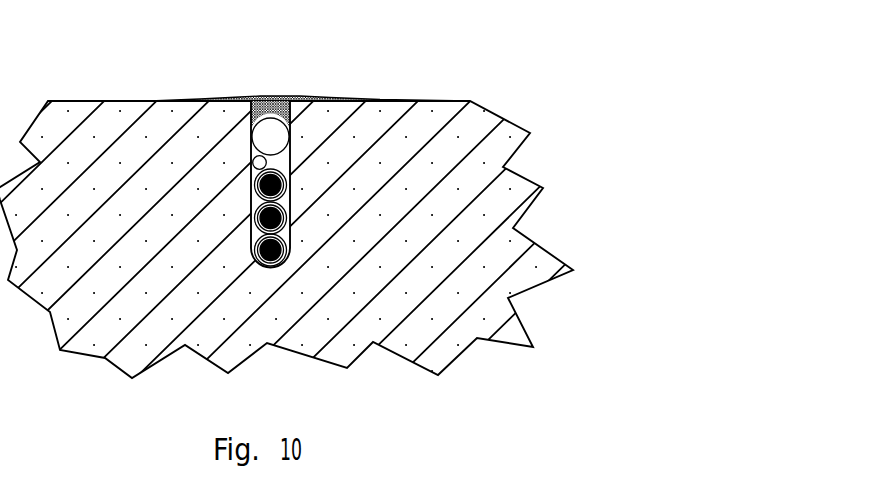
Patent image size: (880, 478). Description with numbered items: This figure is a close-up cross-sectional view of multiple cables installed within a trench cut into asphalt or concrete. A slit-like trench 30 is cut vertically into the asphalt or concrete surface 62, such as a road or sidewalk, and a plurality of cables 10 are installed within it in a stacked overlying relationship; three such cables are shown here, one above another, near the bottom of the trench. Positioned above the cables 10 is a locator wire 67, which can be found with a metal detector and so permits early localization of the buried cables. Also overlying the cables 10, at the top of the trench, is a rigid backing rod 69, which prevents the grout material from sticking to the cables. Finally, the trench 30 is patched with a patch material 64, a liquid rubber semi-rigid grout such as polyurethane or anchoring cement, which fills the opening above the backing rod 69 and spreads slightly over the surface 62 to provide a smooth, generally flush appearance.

The cables 10 is at (286, 266).
The trench 30 is at (252, 207).
The asphalt or concrete surface 62 is at (445, 100).
The patch material 64 is at (272, 94).
The locator wire 67 is at (252, 160).
The rigid backing rod 69 is at (270, 137).